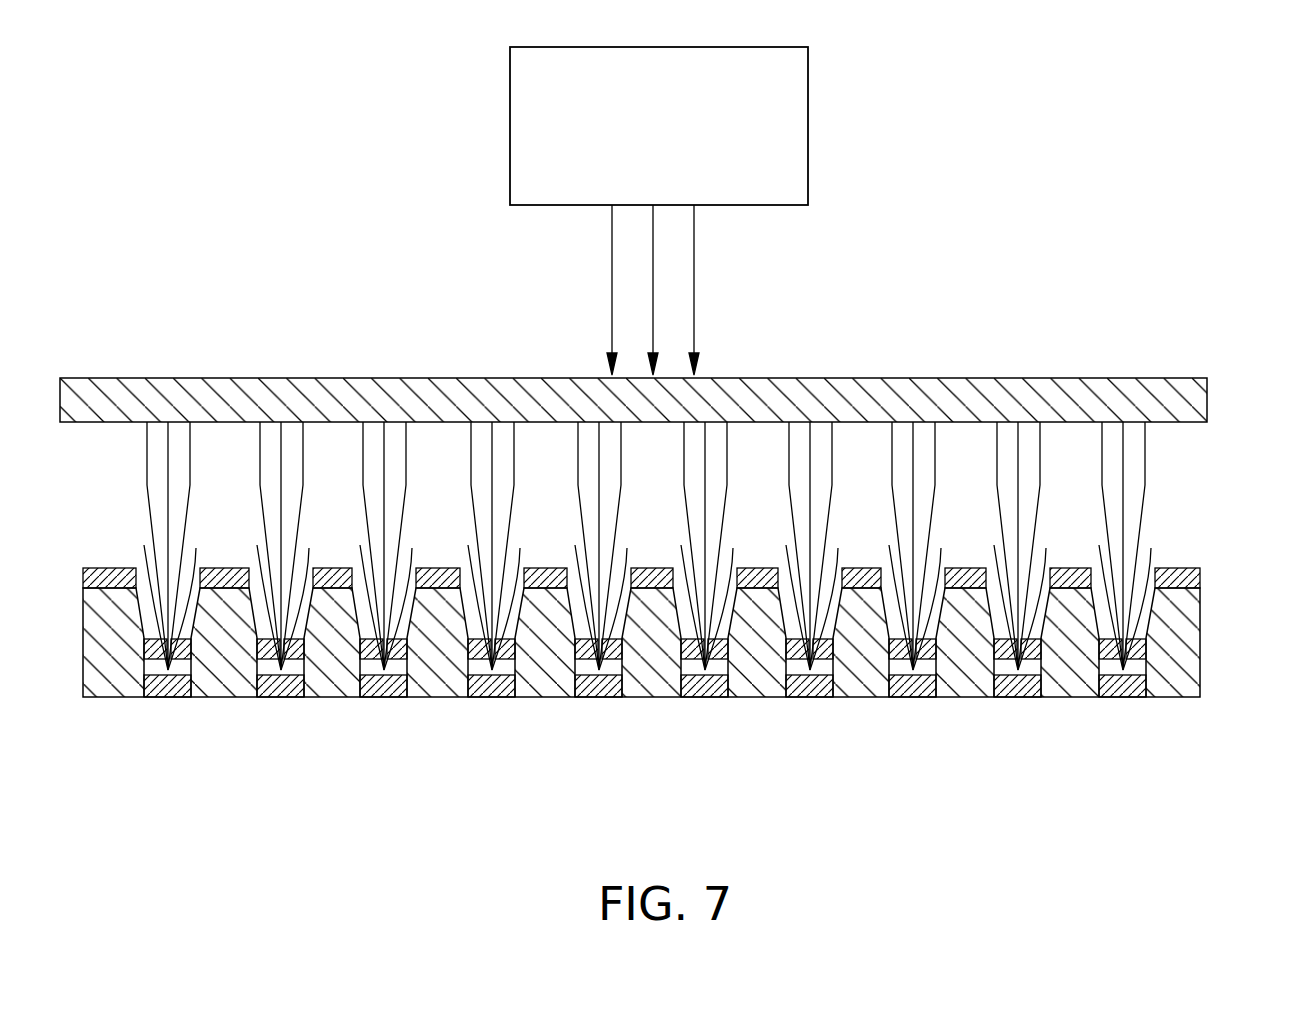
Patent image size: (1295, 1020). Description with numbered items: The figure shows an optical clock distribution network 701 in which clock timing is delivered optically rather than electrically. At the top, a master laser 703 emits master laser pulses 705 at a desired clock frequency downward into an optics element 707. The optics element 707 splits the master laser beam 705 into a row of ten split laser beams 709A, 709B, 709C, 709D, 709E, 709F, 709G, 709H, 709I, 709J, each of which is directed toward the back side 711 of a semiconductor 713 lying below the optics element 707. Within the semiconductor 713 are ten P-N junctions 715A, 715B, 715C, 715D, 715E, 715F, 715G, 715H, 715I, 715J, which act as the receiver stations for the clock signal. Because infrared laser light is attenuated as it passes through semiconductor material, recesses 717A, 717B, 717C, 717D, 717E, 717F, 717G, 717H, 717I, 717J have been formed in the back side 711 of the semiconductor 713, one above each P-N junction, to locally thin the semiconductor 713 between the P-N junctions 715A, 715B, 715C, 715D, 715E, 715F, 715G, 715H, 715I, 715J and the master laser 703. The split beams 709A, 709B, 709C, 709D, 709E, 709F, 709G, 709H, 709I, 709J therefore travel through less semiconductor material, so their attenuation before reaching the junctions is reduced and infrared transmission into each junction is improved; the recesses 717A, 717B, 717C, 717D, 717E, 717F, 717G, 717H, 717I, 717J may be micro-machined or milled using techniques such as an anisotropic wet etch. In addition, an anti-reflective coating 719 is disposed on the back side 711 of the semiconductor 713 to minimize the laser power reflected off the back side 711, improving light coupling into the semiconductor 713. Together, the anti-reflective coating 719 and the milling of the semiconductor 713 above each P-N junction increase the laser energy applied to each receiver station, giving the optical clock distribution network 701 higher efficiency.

The optical clock distribution network 701 is at (1170, 87).
The master laser 703 is at (808, 132).
The master laser pulses 705 is at (695, 297).
The optics element 707 is at (1112, 378).
The split laser beam 709A is at (138, 546).
The split laser beam 709B is at (251, 546).
The split laser beam 709C is at (359, 546).
The split laser beam 709D is at (464, 546).
The split laser beam 709E is at (573, 546).
The split laser beam 709F is at (680, 546).
The split laser beam 709G is at (783, 546).
The split laser beam 709H is at (886, 546).
The split laser beam 709I is at (993, 546).
The split laser beam 709J is at (1099, 546).
The back side 711 is at (1201, 588).
The semiconductor 713 is at (1201, 658).
The P-N junction 715A is at (149, 702).
The P-N junction 715B is at (262, 702).
The P-N junction 715C is at (369, 702).
The P-N junction 715D is at (479, 702).
The P-N junction 715E is at (587, 702).
The P-N junction 715F is at (695, 702).
The P-N junction 715G is at (800, 702).
The P-N junction 715H is at (904, 702).
The P-N junction 715I is at (1012, 702).
The P-N junction 715J is at (1123, 702).
The recess 717A is at (138, 582).
The recess 717B is at (252, 582).
The recess 717C is at (358, 582).
The recess 717D is at (465, 582).
The recess 717E is at (572, 582).
The recess 717F is at (680, 582).
The recess 717G is at (784, 582).
The recess 717H is at (889, 582).
The recess 717I is at (996, 582).
The recess 717J is at (1098, 582).
The anti-reflective coating 719 is at (109, 568).